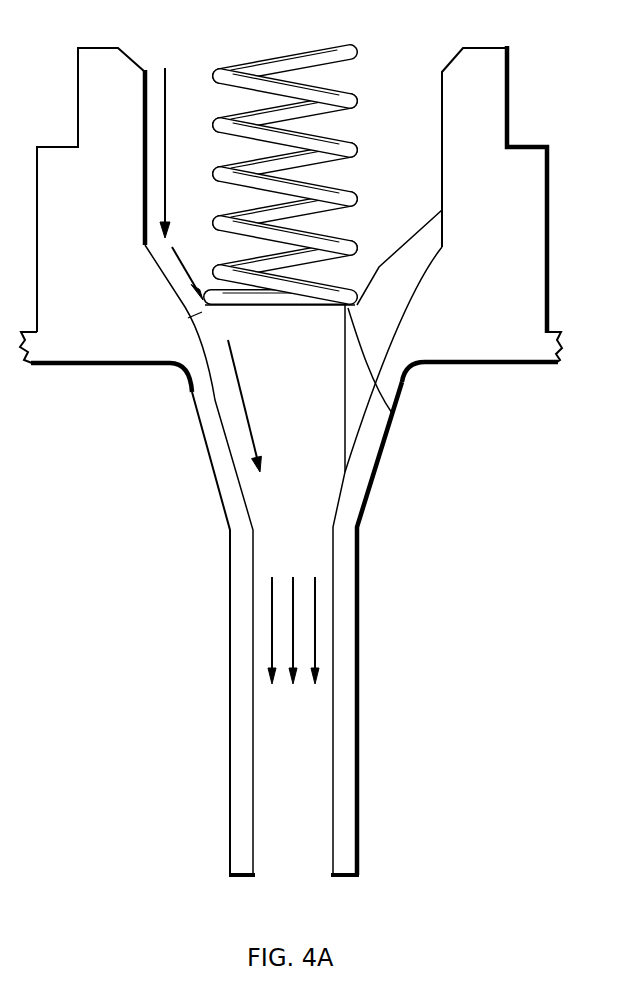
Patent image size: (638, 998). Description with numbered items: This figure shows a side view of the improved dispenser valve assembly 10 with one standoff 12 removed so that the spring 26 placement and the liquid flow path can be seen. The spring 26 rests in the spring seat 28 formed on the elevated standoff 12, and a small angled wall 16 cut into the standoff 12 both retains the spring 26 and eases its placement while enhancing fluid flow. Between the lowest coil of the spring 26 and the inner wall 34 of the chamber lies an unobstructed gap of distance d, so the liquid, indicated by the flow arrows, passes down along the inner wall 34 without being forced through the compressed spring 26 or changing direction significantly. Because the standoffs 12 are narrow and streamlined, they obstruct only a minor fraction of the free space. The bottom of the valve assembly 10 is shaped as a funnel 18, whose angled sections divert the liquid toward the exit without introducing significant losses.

The dispenser valve assembly 10 is at (498, 491).
The standoff 12 is at (405, 275).
The angled wall 16 is at (373, 280).
The funnel 18 is at (220, 458).
The spring 26 is at (348, 52).
The spring seat 28 is at (392, 413).
The inner wall 34 is at (146, 129).